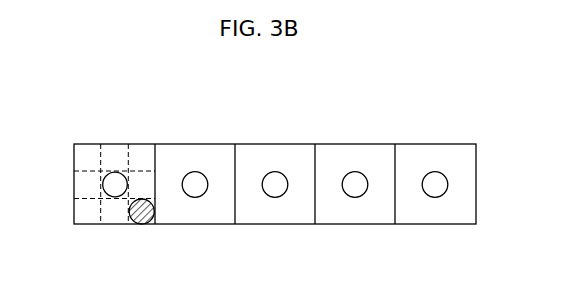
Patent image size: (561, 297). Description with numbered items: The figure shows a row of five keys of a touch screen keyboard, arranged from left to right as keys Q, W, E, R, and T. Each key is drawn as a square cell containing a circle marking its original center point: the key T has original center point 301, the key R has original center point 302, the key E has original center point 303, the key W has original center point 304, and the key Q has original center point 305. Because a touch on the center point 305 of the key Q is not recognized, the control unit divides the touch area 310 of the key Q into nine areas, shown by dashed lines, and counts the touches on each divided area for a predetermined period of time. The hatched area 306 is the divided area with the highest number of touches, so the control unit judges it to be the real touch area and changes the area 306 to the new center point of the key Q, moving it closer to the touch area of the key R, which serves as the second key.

The touch area 310 is at (74, 144).
The original center point 305 is at (115, 172).
The area 306 is at (142, 224).
The original center point 304 is at (195, 172).
The original center point 303 is at (275, 172).
The original center point 302 is at (355, 172).
The original center point 301 is at (435, 172).